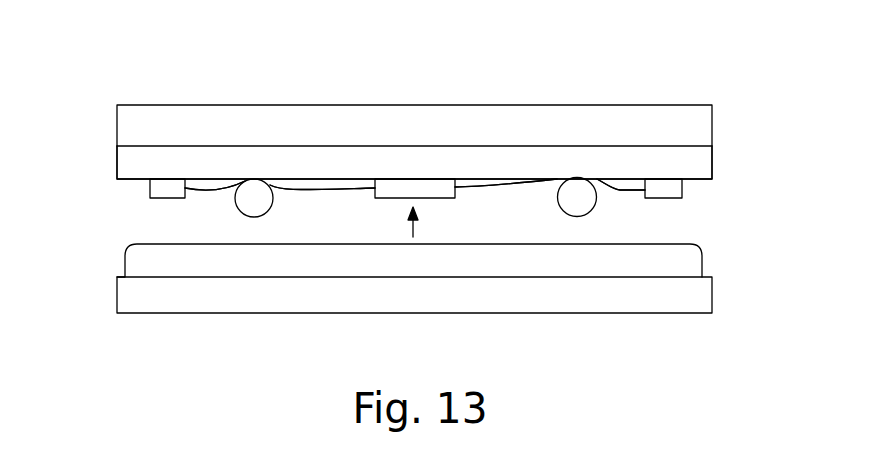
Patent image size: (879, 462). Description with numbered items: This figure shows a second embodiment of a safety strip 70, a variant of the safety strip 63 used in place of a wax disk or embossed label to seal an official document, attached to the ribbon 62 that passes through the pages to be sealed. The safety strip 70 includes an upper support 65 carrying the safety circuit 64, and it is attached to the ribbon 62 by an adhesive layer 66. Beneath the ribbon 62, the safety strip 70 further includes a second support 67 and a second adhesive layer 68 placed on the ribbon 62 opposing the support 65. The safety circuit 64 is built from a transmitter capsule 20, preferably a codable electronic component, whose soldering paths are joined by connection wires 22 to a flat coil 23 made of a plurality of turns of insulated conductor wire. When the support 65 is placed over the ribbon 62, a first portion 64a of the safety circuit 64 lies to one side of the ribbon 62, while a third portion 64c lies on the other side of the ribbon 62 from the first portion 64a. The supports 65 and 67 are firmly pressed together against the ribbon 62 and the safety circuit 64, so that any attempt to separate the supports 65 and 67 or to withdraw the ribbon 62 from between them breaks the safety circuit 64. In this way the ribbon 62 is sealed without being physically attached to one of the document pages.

The safety strip 70 is at (273, 77).
The safety strip 63 is at (723, 123).
The support 65 is at (587, 118).
The adhesive layer 66 is at (705, 160).
The flat coil 23 is at (150, 198).
The transmitter capsule 20 is at (440, 192).
The safety circuit 64 is at (125, 193).
The first portion of safety circuit 64a is at (213, 191).
The third portion of safety circuit 64c is at (341, 190).
The ribbon 62 is at (254, 200).
The connection wires 22 is at (307, 190).
The second adhesive layer 68 is at (135, 265).
The second support 67 is at (692, 303).